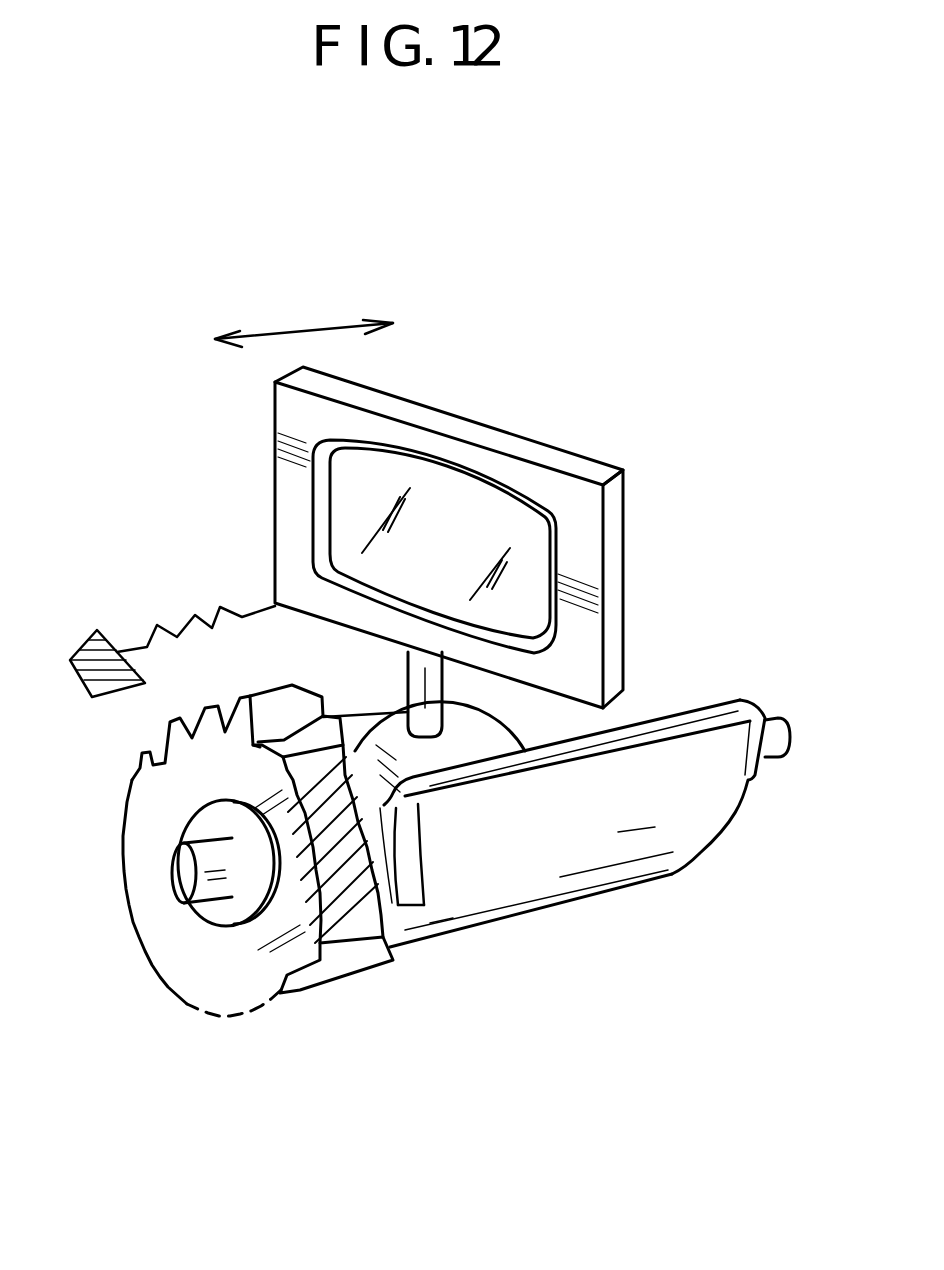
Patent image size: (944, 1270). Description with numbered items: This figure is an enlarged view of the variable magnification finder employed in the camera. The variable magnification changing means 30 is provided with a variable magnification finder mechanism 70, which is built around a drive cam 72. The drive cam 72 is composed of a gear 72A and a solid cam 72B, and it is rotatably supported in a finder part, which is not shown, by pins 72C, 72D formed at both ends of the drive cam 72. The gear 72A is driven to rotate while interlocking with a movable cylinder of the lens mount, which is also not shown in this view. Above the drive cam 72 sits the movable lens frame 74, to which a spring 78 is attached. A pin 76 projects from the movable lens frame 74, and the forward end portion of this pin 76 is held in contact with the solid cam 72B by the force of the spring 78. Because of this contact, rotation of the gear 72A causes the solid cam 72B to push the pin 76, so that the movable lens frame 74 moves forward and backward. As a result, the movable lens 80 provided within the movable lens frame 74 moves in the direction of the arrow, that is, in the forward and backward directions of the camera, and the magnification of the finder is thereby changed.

The variable magnification changing means 30 is at (666, 392).
The variable magnification finder mechanism 70 is at (501, 415).
The drive cam 72 is at (500, 712).
The gear 72A is at (200, 684).
The solid cam 72B is at (463, 748).
The pin 72C is at (231, 900).
The pin 72D is at (780, 757).
The movable lens frame 74 is at (616, 542).
The pin 76 is at (422, 684).
The spring 78 is at (194, 617).
The movable lens 80 is at (347, 492).